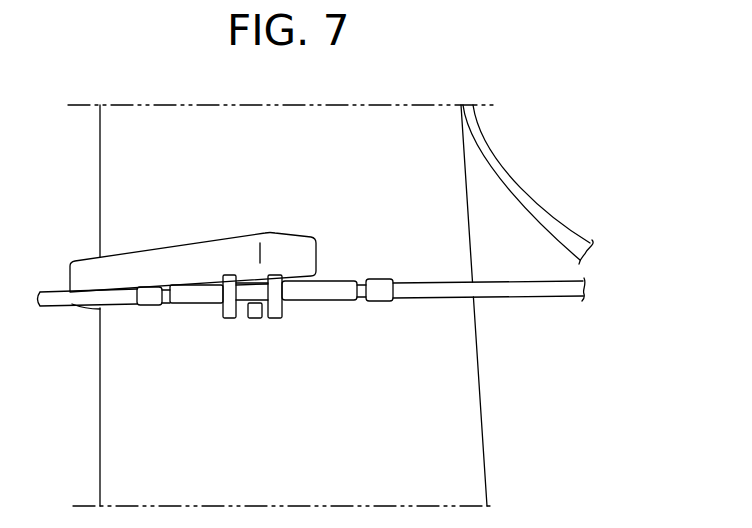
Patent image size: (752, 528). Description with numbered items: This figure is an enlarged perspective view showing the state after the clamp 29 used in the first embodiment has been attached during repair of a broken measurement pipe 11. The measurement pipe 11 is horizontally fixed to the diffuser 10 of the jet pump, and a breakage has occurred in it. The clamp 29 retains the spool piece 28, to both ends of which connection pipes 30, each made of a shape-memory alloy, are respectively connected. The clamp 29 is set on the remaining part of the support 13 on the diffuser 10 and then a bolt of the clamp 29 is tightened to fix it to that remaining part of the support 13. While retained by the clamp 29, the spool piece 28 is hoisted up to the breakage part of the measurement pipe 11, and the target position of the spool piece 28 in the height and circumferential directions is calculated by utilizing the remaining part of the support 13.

The diffuser 10 is at (472, 428).
The measurement pipe 11 is at (549, 289).
The support 13 is at (258, 313).
The spool piece 28 is at (323, 293).
The clamp 29 is at (83, 262).
The connection pipe 30 is at (153, 305).